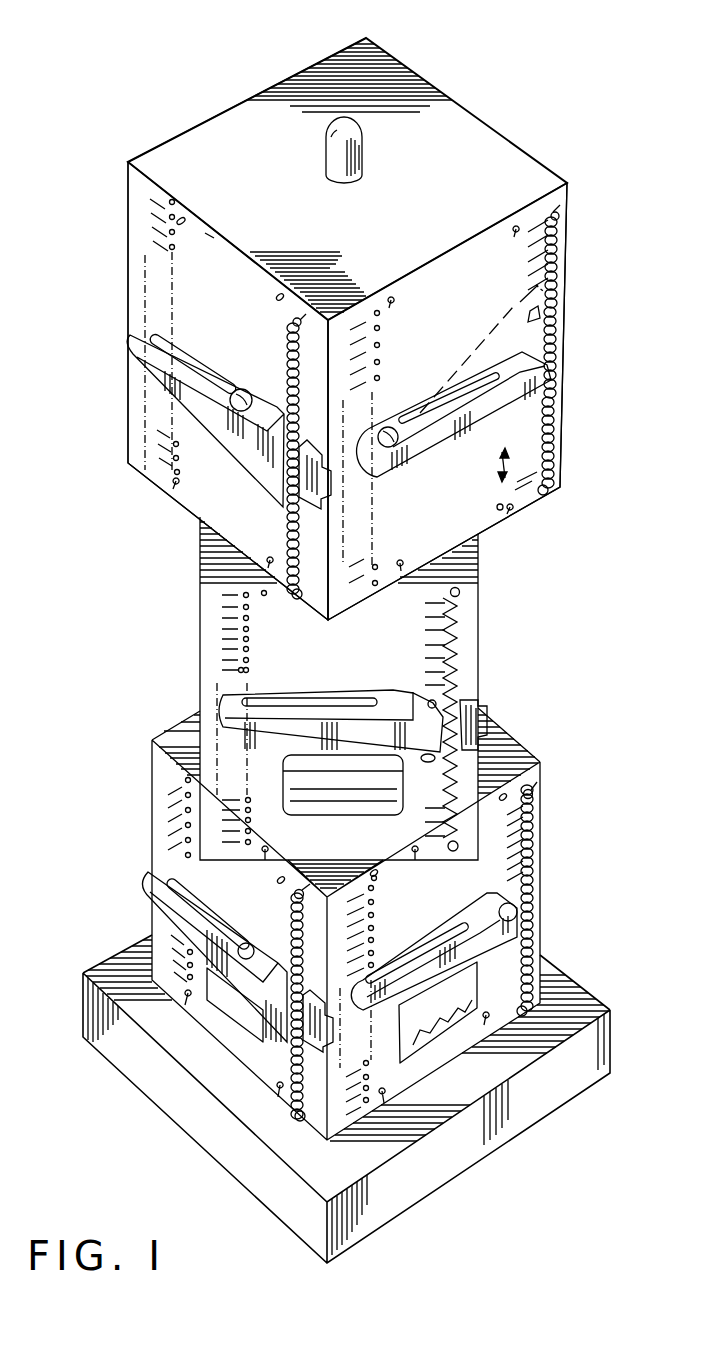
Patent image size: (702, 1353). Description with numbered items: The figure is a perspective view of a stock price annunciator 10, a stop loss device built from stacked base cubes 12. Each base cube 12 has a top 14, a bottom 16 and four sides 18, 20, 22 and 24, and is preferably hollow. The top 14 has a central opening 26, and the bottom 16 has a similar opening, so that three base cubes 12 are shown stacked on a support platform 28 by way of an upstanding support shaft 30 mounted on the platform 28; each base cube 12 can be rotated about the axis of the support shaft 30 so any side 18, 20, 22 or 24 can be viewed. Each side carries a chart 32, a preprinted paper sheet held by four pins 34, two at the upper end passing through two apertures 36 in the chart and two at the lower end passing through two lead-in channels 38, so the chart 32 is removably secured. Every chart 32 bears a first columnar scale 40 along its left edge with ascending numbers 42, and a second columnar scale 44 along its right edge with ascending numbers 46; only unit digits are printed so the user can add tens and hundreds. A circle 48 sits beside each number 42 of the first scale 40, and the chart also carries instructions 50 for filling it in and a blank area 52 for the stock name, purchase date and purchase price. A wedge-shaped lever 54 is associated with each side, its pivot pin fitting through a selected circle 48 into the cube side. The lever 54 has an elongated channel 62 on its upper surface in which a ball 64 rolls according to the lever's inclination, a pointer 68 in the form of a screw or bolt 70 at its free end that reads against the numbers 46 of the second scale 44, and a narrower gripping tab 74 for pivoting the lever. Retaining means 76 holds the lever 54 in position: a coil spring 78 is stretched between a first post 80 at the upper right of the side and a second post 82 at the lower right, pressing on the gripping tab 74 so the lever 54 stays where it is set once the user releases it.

The stock price annunciator 10 is at (537, 142).
The base cube 12 is at (476, 114).
The top 14 is at (431, 98).
The bottom 16 is at (141, 466).
The side 18 is at (564, 199).
The side 20 is at (209, 230).
The side 22 is at (206, 120).
The side 24 is at (399, 70).
The central opening 26 is at (339, 182).
The support platform 28 is at (123, 1048).
The support shaft 30 is at (331, 137).
The chart 32 is at (464, 249).
The pin 34 is at (516, 226).
The aperture 36 is at (505, 228).
The lead-in channel 38 is at (398, 560).
The first columnar scale 40 is at (136, 246).
The number 42 is at (141, 215).
The second columnar scale 44 is at (481, 621).
The number 46 is at (479, 642).
The circle 48 is at (178, 217).
The instructions 50 is at (240, 272).
The blank area 52 is at (329, 801).
The lever 54 is at (133, 348).
The elongated channel 62 is at (192, 362).
The ball 64 is at (241, 389).
The pointer 68 is at (430, 699).
The screw or bolt 70 is at (434, 763).
The gripping tab 74 is at (306, 455).
The retaining means 76 is at (564, 256).
The coil spring 78 is at (558, 290).
The first post 80 is at (560, 222).
The second post 82 is at (548, 488).